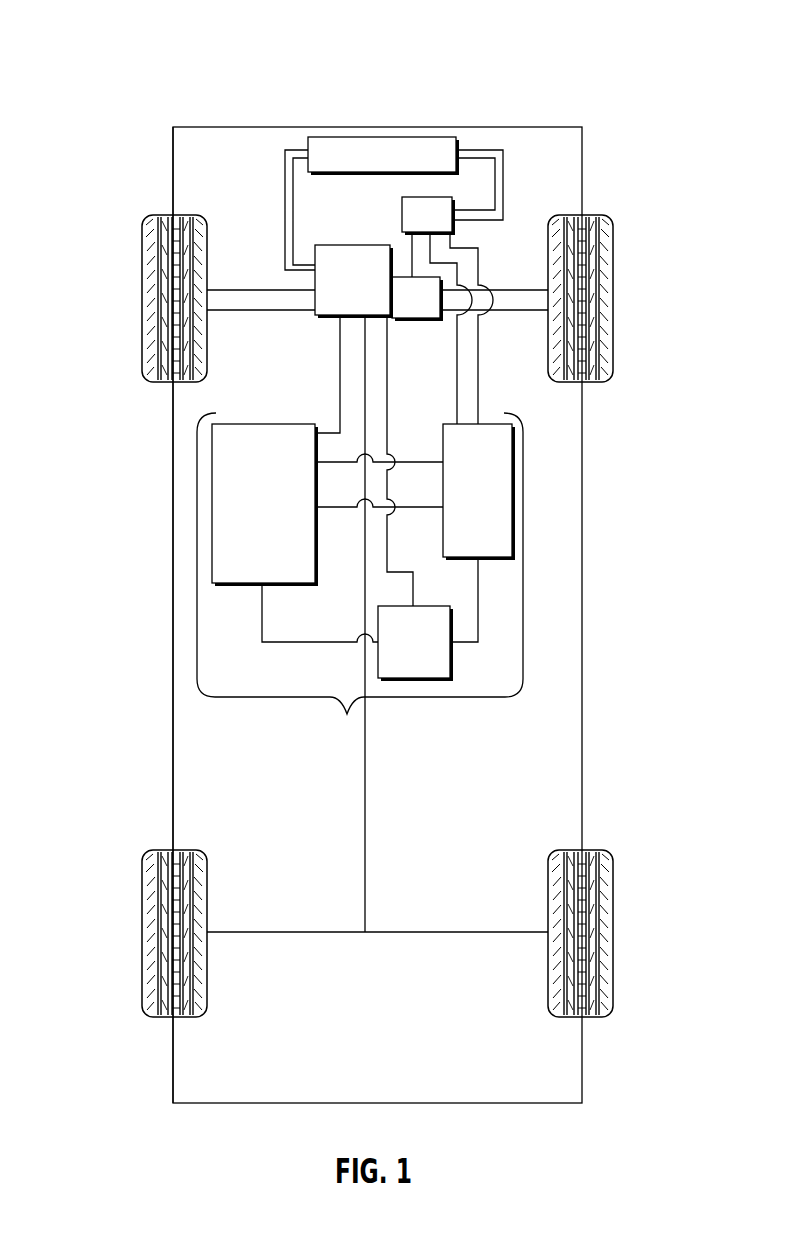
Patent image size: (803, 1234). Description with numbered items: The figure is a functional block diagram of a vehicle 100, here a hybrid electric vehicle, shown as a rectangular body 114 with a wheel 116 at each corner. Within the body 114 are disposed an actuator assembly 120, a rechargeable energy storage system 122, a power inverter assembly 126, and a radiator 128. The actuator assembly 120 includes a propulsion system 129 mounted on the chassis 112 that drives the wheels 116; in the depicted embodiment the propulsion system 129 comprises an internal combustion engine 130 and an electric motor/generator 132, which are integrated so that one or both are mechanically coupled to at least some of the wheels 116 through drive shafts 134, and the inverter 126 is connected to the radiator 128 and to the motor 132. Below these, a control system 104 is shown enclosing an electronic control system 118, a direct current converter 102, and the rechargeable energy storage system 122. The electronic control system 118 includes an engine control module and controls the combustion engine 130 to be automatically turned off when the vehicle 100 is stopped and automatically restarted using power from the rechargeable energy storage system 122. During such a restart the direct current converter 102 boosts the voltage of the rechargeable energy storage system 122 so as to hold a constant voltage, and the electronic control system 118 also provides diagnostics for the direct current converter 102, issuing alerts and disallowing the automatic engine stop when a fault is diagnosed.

The vehicle 100 is at (166, 47).
The direct current (DC) converter 102 is at (437, 654).
The control system 104 is at (360, 581).
The chassis 112 is at (365, 803).
The body 114 is at (173, 753).
The wheels 116 is at (142, 297).
The electronic control system (ECS) 118 is at (286, 518).
The actuator assembly 120 is at (396, 329).
The rechargeable energy storage system (RESS) 122 is at (500, 502).
The power inverter assembly 126 is at (450, 228).
The radiator 128 is at (404, 168).
The propulsion system 129 is at (405, 277).
The internal combustion engine 130 is at (375, 296).
The electric motor/generator 132 is at (439, 312).
The drive shafts 134 is at (240, 288).